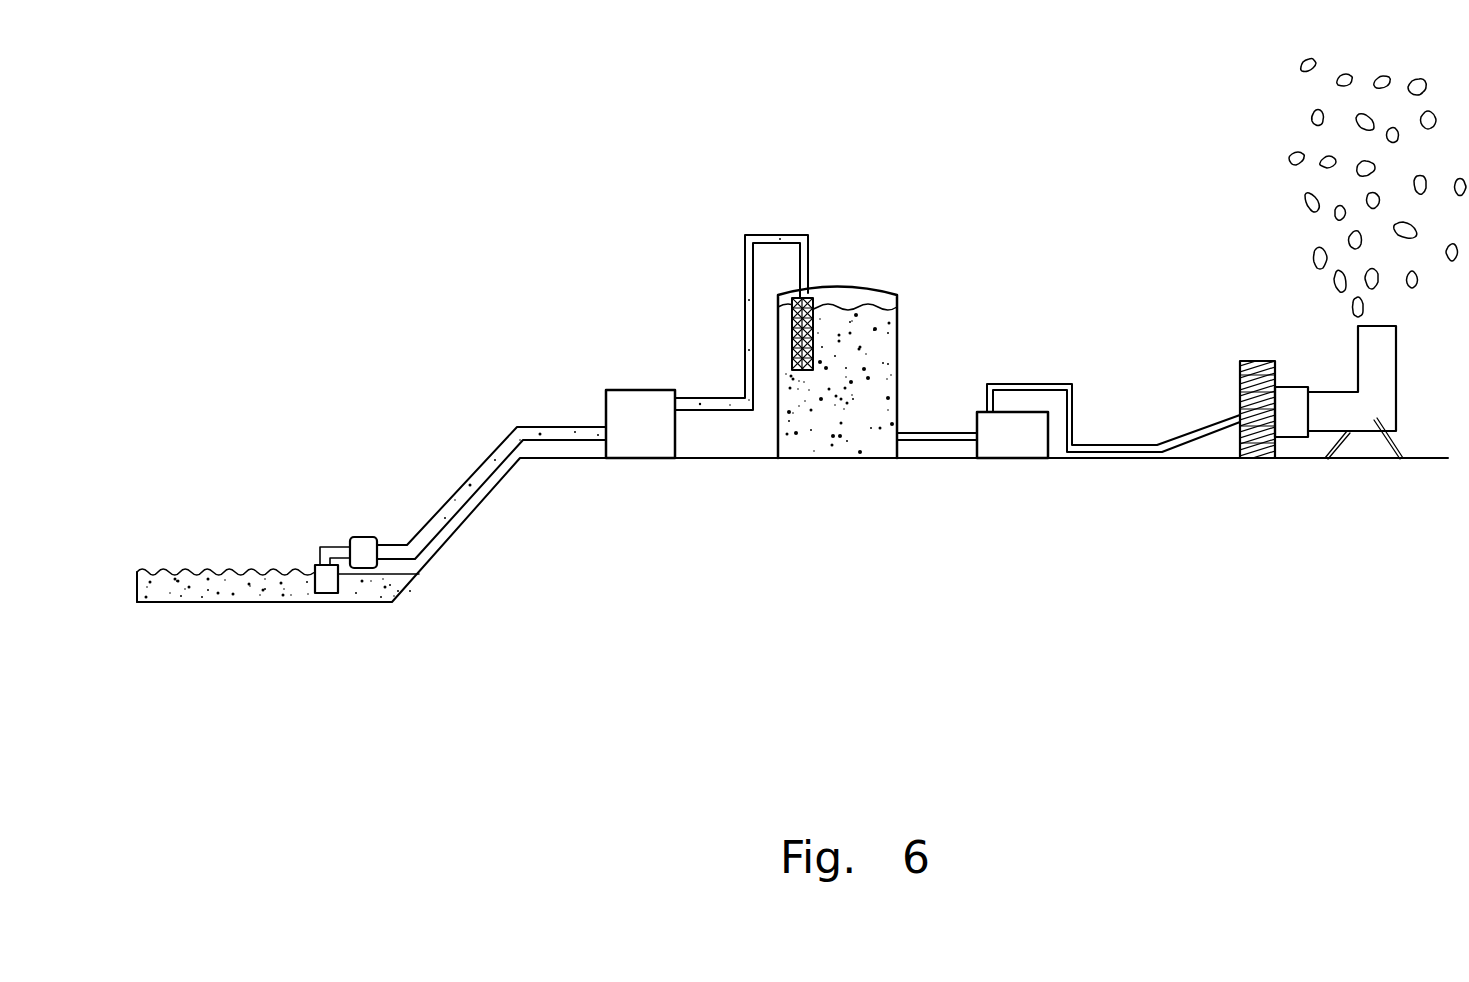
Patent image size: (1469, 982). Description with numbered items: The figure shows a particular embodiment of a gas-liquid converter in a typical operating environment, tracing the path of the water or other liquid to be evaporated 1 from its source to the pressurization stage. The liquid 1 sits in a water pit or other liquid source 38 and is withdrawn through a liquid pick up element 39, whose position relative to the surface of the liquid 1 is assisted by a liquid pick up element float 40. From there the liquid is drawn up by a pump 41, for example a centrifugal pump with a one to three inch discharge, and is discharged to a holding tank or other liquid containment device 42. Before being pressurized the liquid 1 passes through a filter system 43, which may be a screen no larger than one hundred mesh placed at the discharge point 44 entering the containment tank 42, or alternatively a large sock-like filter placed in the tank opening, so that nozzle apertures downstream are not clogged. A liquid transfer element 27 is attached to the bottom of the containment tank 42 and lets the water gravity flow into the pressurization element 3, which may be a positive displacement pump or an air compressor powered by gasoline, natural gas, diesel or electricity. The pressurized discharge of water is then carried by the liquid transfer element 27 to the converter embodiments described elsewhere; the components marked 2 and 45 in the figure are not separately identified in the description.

The water or liquid to be evaporated 1 is at (245, 590).
The granular material particles 2 is at (1332, 232).
The pressurization element 3 is at (1013, 412).
The liquid transfer element 27 is at (953, 433).
The water pit 38 is at (397, 484).
The liquid pick up element 39 is at (323, 582).
The liquid pick up element float 40 is at (365, 552).
The pump 41 is at (632, 417).
The holding tank 42 is at (898, 293).
The filter system 43 is at (820, 313).
The discharge point 44 is at (803, 273).
The spraying device 45 is at (1355, 362).